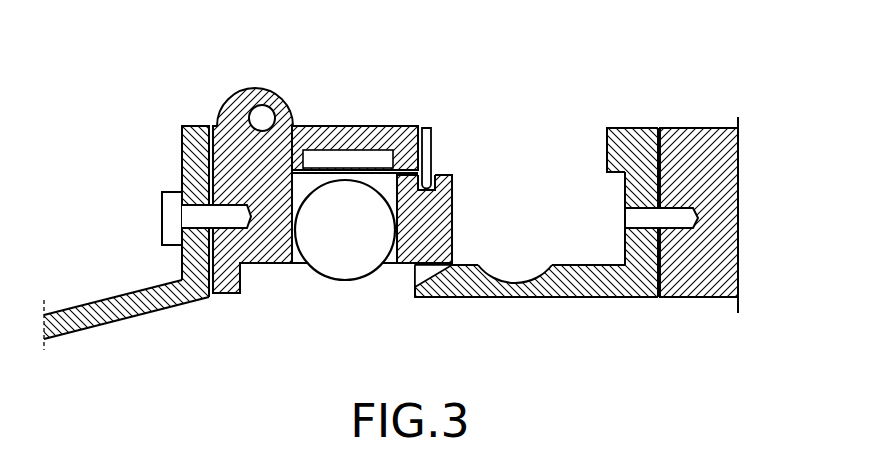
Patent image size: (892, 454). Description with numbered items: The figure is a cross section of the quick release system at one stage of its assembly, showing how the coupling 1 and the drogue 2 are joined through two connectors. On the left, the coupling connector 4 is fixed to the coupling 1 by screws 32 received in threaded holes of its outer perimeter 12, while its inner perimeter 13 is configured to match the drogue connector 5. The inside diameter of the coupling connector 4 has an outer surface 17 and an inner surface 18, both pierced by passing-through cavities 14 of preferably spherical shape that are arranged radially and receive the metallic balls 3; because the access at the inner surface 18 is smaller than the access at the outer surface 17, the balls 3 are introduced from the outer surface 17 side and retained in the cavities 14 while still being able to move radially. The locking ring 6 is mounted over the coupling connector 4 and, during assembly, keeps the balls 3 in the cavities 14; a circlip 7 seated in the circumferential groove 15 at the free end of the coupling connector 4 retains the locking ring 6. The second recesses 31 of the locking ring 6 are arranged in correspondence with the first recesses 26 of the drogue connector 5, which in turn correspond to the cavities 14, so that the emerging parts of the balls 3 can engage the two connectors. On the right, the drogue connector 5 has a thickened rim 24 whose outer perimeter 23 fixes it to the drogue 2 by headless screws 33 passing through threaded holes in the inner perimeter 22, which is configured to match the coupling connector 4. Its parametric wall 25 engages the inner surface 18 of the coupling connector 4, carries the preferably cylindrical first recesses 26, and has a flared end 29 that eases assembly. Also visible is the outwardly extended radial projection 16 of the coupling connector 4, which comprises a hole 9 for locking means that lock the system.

The coupling 1 is at (192, 145).
The drogue 2 is at (698, 284).
The metallic balls 3 is at (358, 248).
The coupling connector 4 is at (232, 148).
The drogue connector 5 is at (645, 302).
The locking ring 6 is at (312, 134).
The circlip 7 is at (427, 126).
The hole 9 is at (263, 116).
The outer perimeter 12 is at (183, 255).
The inner perimeter 13 is at (452, 226).
The passing-through cavities 14 is at (308, 264).
The circumferential groove 15 is at (435, 200).
The outwardly extended radial projection 16 is at (240, 103).
The outer surface 17 is at (307, 176).
The inner surface 18 is at (260, 264).
The inner perimeter 22 is at (606, 152).
The outer perimeter 23 is at (652, 182).
The thickened rim 24 is at (630, 145).
The parametric wall 25 is at (581, 278).
The first recesses 26 is at (515, 283).
The flared end 29 is at (433, 297).
The second recesses 31 is at (346, 160).
The screws 32 is at (167, 217).
The headless screws 33 is at (684, 214).